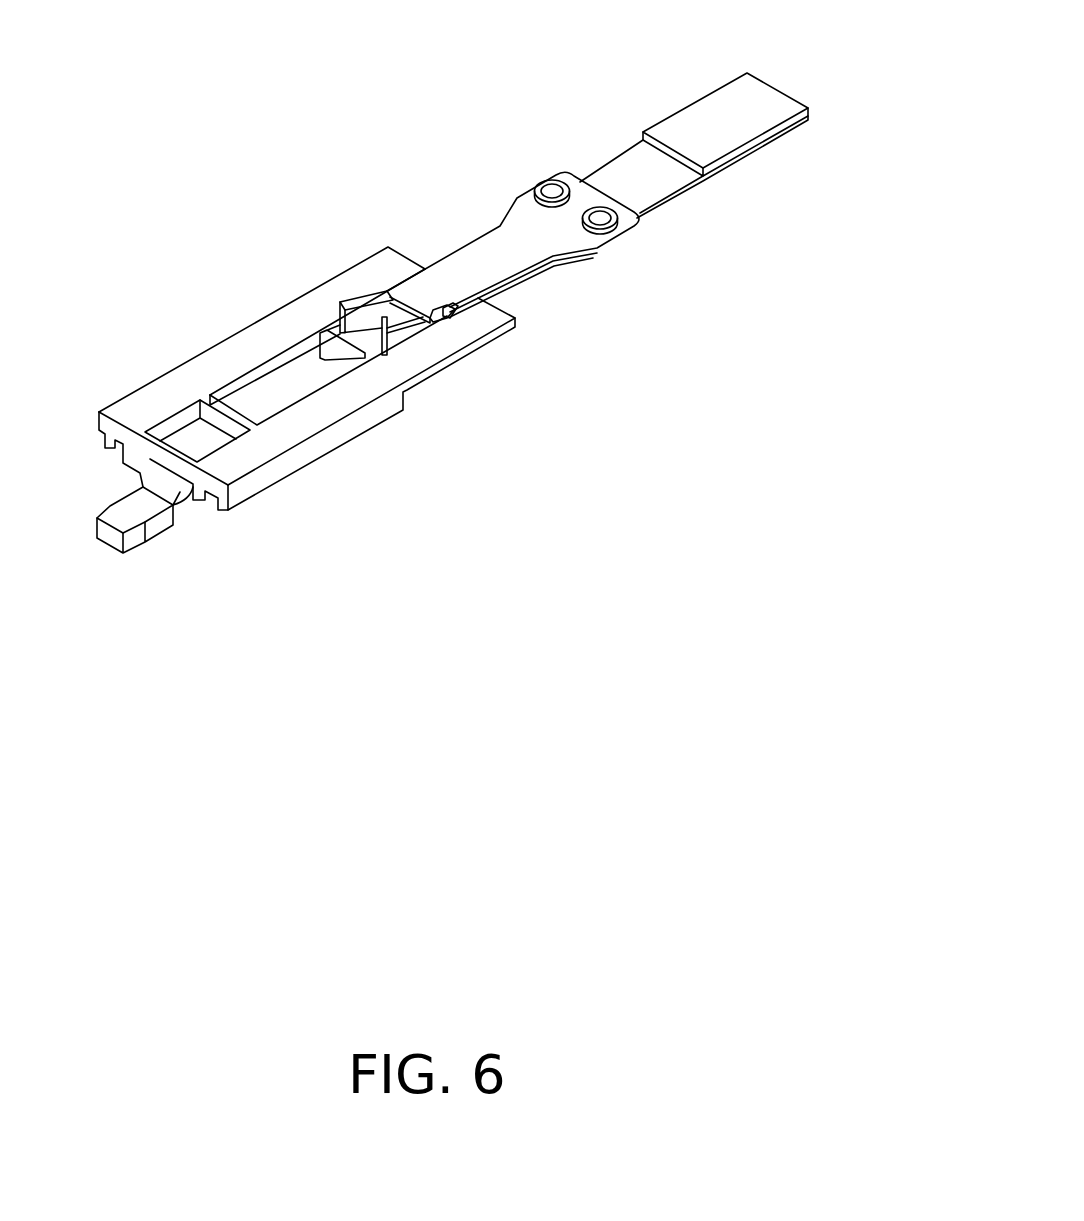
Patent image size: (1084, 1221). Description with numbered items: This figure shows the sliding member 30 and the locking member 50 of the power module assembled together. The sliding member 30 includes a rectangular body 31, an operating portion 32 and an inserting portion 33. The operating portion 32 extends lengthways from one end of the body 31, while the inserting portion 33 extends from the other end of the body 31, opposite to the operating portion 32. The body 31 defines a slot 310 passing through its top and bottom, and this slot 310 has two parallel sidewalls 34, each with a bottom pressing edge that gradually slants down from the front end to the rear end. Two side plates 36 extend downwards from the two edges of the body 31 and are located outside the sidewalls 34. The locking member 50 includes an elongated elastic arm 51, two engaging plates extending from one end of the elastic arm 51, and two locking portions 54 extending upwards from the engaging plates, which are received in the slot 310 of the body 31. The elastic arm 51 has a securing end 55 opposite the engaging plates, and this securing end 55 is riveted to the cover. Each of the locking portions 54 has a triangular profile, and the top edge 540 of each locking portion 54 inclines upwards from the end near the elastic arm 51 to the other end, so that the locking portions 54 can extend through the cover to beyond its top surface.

The sliding member 30 is at (698, 118).
The body 31 is at (175, 387).
The operating portion 32 is at (620, 173).
The inserting portion 33 is at (122, 518).
The sidewalls 34 is at (295, 357).
The side plates 36 is at (335, 443).
The locking member 50 is at (513, 217).
The elastic arm 51 is at (503, 267).
The locking portions 54 is at (393, 340).
The securing end 55 is at (636, 220).
The slot 310 is at (265, 407).
The top edge 540 is at (448, 338).